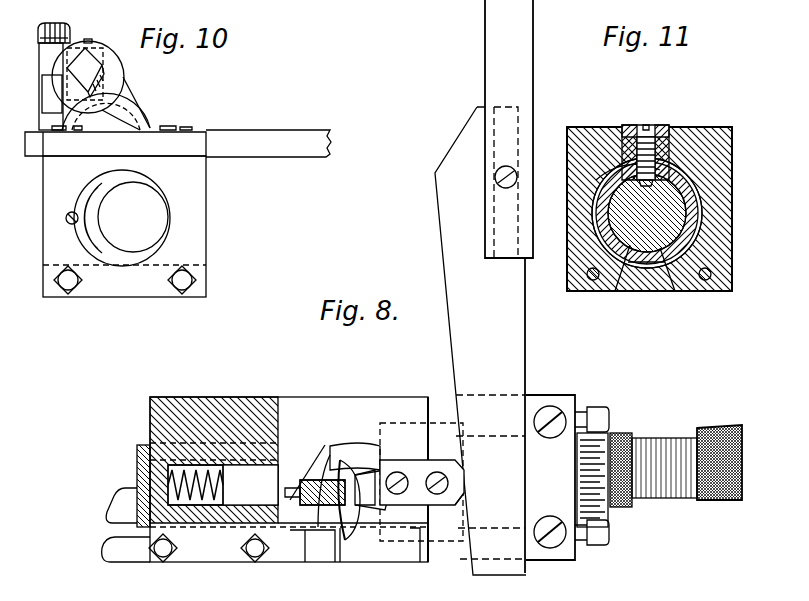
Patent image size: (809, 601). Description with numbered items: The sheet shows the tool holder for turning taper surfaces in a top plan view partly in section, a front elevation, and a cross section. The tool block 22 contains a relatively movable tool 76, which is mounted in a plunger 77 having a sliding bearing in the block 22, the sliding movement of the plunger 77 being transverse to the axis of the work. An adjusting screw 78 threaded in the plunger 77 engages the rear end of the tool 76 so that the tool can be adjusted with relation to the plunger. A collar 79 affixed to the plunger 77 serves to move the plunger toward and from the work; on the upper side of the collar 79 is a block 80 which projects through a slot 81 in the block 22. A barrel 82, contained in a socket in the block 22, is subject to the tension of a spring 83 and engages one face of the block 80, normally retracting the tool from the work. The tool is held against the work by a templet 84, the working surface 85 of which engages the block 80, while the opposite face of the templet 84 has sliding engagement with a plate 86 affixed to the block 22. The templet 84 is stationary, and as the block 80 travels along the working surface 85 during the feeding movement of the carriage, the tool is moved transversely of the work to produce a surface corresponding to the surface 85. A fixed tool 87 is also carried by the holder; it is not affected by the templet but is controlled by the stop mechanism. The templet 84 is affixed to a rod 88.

In FIG. 10, the tool block 22 is at (206, 205).
In FIG. 11, the tool block 22 is at (590, 127).
In FIG. 8, the tool block 22 is at (312, 397).
In FIG. 8, the tool 76 is at (112, 506).
In FIG. 11, the plunger 77 is at (662, 248).
In FIG. 8, the plunger 77 is at (137, 457).
In FIG. 11, the adjusting screw 78 is at (633, 237).
In FIG. 8, the adjusting screw 78 is at (672, 498).
In FIG. 11, the collar 79 is at (650, 292).
In FIG. 8, the collar 79 is at (384, 424).
In FIG. 11, the block 80 is at (628, 125).
In FIG. 8, the block 80 is at (406, 460).
In FIG. 8, the slot 81 is at (456, 506).
In FIG. 10, the barrel 82 is at (118, 118).
In FIG. 8, the barrel 82 is at (250, 485).
In FIG. 8, the spring 83 is at (210, 505).
In FIG. 10, the templet 84 is at (268, 144).
In FIG. 8, the templet 84 is at (501, 415).
In FIG. 8, the working surface 85 is at (452, 371).
In FIG. 10, the plate 86 is at (115, 145).
In FIG. 8, the fixed tool 87 is at (108, 548).
In FIG. 8, the rod 88 is at (509, 129).